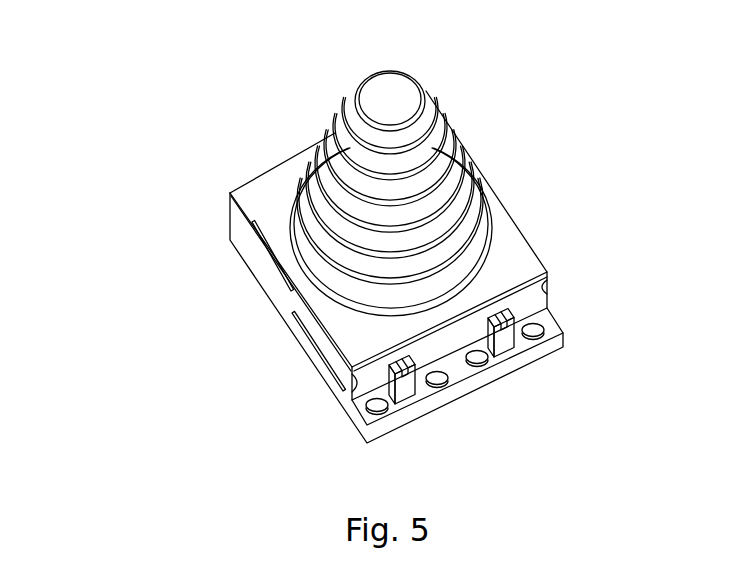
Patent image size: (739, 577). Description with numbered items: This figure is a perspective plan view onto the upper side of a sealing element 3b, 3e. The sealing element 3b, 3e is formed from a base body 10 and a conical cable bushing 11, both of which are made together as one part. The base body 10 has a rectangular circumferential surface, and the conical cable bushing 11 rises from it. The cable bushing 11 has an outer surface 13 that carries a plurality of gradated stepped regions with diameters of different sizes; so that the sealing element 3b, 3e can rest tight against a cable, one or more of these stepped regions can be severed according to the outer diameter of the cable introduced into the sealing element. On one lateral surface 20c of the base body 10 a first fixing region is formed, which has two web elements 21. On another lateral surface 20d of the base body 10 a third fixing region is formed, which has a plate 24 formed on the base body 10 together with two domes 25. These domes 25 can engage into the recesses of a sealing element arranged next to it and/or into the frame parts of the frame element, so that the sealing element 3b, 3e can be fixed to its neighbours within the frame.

The sealing element 3b is at (364, 231).
The sealing element 3e is at (387, 231).
The base body 10 is at (507, 257).
The conical cable bushing 11 is at (438, 193).
The outer surface 13 is at (432, 166).
The lateral surface 20c is at (229, 307).
The lateral surface 20d is at (518, 300).
The web elements 21 is at (282, 277).
The plate 24 is at (455, 368).
The domes 25 is at (511, 344).